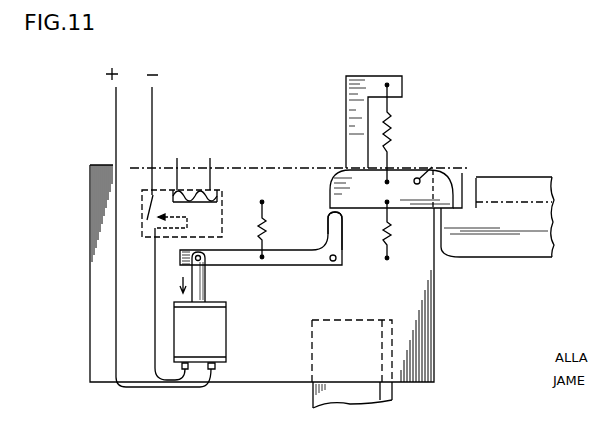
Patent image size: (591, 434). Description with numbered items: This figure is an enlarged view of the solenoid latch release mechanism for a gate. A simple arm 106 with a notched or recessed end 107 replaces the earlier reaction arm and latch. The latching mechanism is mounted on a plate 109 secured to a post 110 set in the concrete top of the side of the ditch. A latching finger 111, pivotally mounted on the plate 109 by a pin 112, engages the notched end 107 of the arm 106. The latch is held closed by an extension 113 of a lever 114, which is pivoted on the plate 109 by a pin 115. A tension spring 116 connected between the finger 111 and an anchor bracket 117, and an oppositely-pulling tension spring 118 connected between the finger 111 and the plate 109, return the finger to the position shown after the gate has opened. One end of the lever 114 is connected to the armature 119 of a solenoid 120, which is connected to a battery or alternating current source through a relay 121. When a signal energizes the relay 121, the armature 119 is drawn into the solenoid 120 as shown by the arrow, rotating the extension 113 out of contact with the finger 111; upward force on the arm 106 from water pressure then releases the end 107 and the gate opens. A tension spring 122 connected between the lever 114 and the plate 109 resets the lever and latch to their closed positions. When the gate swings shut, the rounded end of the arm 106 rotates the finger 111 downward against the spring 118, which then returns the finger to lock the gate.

The arm 106 is at (545, 227).
The notched or recessed end 107 is at (480, 173).
The plate 109 is at (433, 353).
The post 110 is at (392, 392).
The latching finger 111 is at (462, 205).
The pin 112 is at (432, 167).
The extension 113 is at (323, 245).
The lever 114 is at (283, 266).
The pin 115 is at (333, 262).
The tension spring 116 is at (393, 145).
The anchor bracket 117 is at (402, 97).
The tension spring 118 is at (391, 238).
The armature 119 is at (206, 287).
The solenoid 120 is at (227, 342).
The relay 121 is at (215, 190).
The tension spring 122 is at (266, 226).